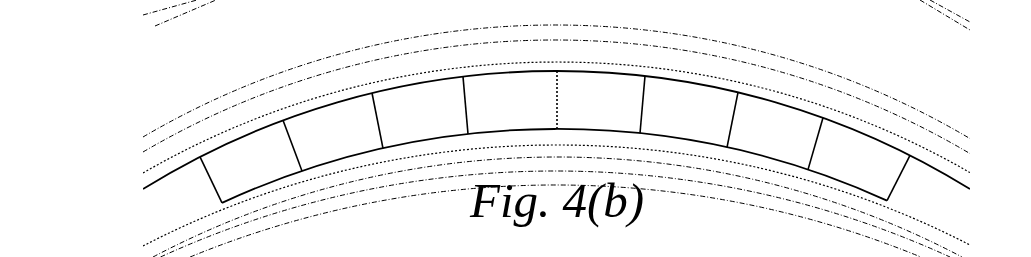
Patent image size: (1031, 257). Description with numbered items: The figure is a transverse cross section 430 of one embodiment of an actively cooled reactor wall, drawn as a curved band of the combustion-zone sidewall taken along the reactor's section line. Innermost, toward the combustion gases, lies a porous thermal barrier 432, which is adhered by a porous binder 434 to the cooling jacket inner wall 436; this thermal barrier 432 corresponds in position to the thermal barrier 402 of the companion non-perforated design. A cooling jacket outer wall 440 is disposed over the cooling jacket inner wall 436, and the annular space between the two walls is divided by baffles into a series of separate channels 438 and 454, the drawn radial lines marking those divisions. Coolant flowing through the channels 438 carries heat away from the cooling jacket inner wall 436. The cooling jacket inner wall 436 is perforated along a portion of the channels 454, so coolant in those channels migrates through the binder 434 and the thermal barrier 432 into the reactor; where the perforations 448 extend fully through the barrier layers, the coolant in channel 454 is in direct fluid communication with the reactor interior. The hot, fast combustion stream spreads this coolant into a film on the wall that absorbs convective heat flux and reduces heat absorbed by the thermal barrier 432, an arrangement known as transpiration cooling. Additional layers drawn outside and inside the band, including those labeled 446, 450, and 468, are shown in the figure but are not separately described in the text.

The thermal barrier 402 is at (248, 0).
The transverse cross section 430 is at (931, 97).
The thermal barrier 432 is at (233, 232).
The binder 434 is at (300, 193).
The cooling jacket inner wall 436 is at (358, 163).
The channels 438 is at (510, 83).
The cooling jacket outer wall 440 is at (283, 118).
The outer layer 446 is at (235, 110).
The perforations 448 is at (192, 125).
The ring segment 450 is at (460, 106).
The channels 454 is at (685, 112).
The inner layer 468 is at (662, 256).